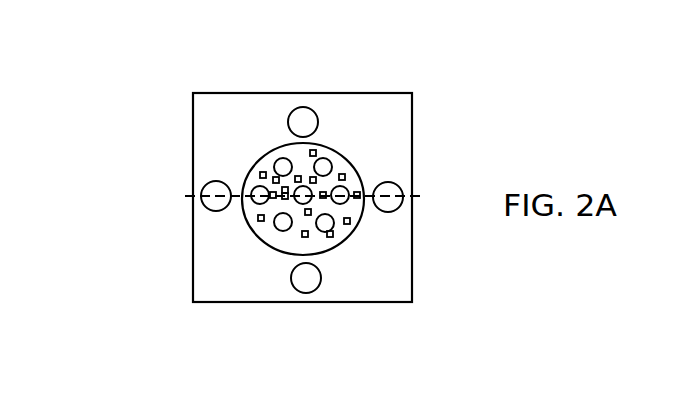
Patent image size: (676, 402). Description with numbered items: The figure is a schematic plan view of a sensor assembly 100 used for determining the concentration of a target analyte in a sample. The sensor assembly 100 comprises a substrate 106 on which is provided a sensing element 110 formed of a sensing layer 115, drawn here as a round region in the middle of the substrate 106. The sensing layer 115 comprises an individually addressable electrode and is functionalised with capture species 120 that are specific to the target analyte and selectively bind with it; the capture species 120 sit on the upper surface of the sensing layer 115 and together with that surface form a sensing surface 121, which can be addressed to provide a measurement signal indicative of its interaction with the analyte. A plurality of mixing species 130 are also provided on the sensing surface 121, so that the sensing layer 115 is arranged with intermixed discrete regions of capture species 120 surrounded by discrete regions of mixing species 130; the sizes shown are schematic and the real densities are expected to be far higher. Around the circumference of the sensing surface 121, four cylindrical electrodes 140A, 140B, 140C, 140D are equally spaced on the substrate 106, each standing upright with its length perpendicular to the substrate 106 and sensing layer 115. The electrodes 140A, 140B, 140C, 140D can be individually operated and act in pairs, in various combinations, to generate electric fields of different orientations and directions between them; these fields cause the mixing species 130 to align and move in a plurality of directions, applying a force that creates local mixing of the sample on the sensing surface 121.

The sensor assembly 100 is at (178, 84).
The substrate 106 is at (215, 263).
The sensing element 110 is at (232, 172).
The sensing layer 115 is at (353, 228).
The capture species 120 is at (325, 166).
The sensing surface 121 is at (330, 147).
The mixing species 130 is at (310, 237).
The cylindrical electrode 140A is at (212, 204).
The cylindrical electrode 140B is at (393, 206).
The cylindrical electrode 140C is at (302, 121).
The cylindrical electrode 140D is at (298, 285).